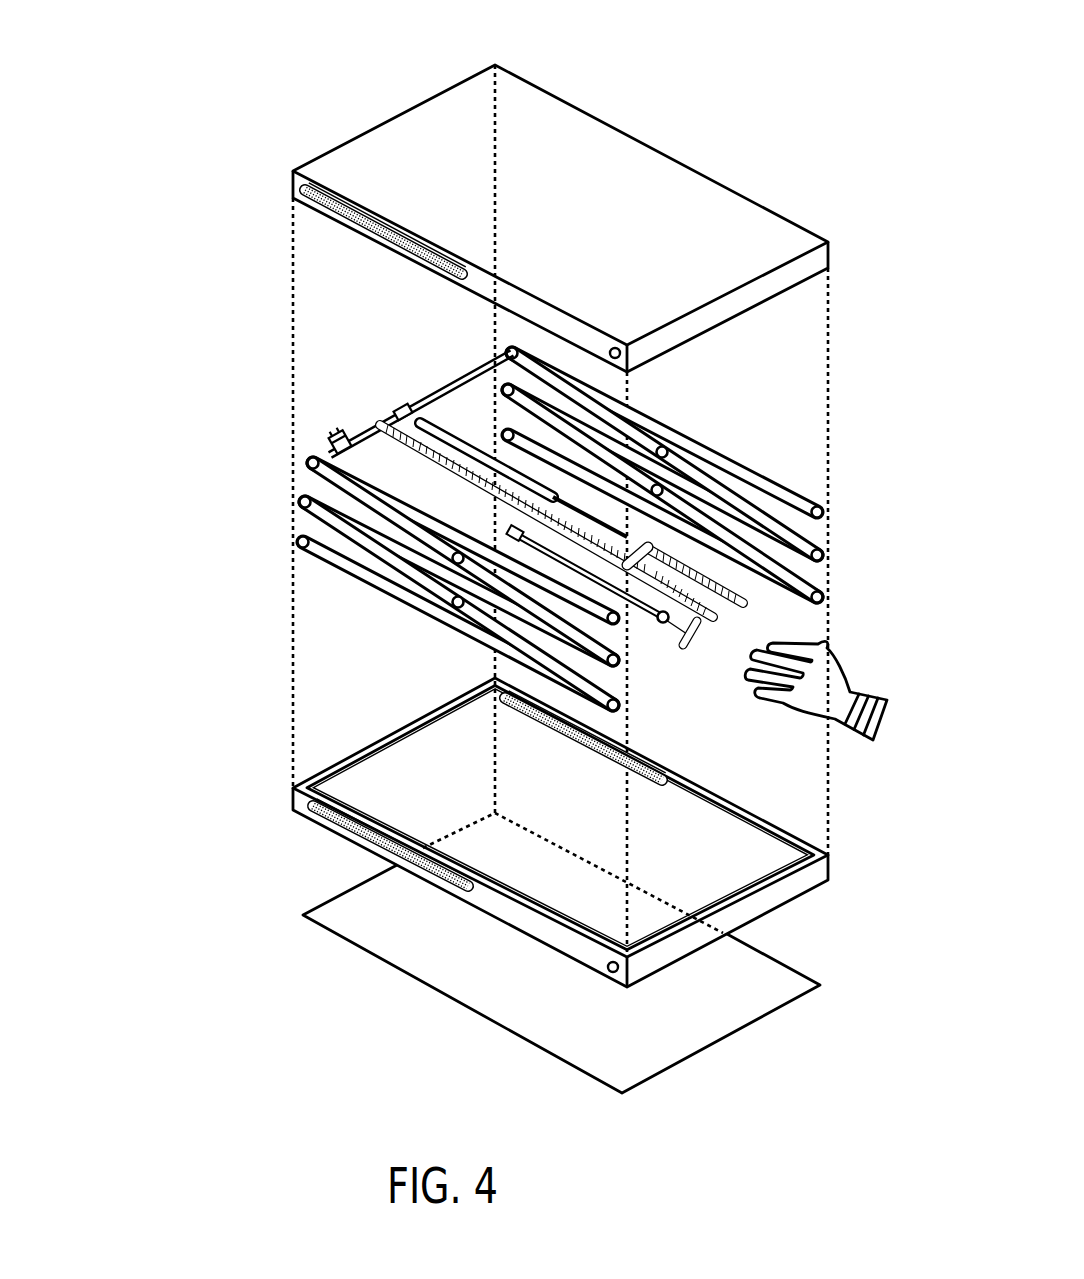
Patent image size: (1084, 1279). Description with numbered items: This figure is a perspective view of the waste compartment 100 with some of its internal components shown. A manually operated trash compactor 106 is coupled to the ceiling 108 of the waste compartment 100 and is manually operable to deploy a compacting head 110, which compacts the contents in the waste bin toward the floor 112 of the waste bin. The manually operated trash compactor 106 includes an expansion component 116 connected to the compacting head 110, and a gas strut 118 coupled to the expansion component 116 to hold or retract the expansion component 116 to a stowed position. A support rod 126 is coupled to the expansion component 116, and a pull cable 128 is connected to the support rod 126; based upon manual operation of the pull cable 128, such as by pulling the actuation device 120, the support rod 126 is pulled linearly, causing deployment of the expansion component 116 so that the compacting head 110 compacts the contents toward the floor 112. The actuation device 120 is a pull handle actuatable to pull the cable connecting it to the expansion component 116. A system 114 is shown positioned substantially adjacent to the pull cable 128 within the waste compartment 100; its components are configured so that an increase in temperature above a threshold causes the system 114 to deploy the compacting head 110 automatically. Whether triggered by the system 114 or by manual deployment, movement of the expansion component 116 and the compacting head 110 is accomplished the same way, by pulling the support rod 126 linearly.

The waste compartment 100 is at (660, 48).
The manually operated trash compactor 106 is at (132, 340).
The ceiling 108 is at (806, 220).
The compacting head 110 is at (340, 755).
The floor 112 is at (329, 894).
The system 114 is at (398, 389).
The expansion component 116 is at (291, 509).
The gas strut 118 is at (584, 502).
The actuation device 120 is at (708, 642).
The support rod 126 is at (465, 361).
The pull cable 128 is at (407, 482).